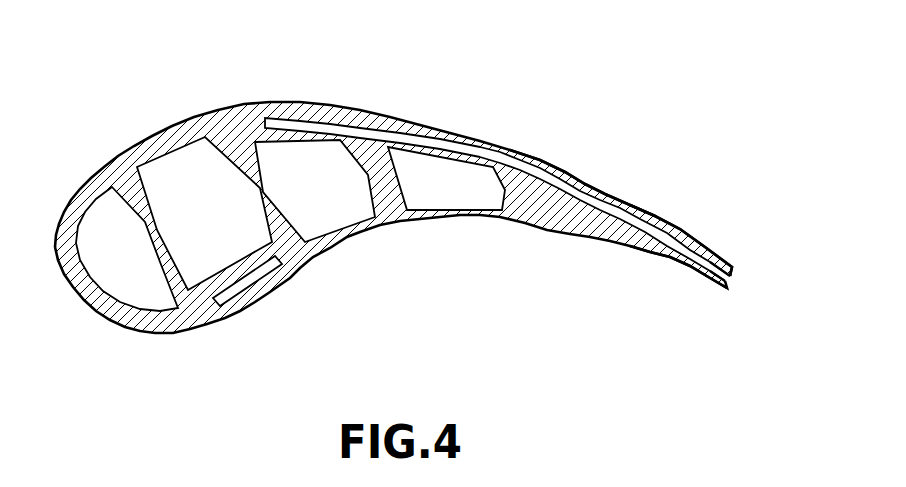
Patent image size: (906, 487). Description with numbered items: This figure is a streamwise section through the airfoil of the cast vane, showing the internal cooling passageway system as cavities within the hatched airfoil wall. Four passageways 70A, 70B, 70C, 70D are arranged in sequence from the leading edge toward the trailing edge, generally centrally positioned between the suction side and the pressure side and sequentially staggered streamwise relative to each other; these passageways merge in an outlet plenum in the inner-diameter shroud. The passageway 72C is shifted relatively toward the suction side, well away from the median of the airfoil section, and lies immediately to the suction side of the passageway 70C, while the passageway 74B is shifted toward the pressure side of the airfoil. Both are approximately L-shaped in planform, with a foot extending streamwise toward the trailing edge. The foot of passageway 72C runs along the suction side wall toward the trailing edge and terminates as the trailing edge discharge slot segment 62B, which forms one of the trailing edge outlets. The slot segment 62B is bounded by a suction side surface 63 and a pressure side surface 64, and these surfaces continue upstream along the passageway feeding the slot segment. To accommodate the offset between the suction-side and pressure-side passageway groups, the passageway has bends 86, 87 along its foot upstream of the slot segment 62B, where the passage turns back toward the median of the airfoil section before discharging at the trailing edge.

The passageway 70A is at (142, 263).
The passageway 70B is at (226, 220).
The passageway 70C is at (338, 202).
The passageway 70D is at (463, 192).
The passageway 72C is at (332, 108).
The bend 87 is at (518, 152).
The bend 86 is at (580, 187).
The pressure side surface 64 is at (655, 214).
The suction side surface 63 is at (672, 247).
The trailing edge discharge slot segment 62B is at (712, 257).
The passageway 74B is at (260, 278).